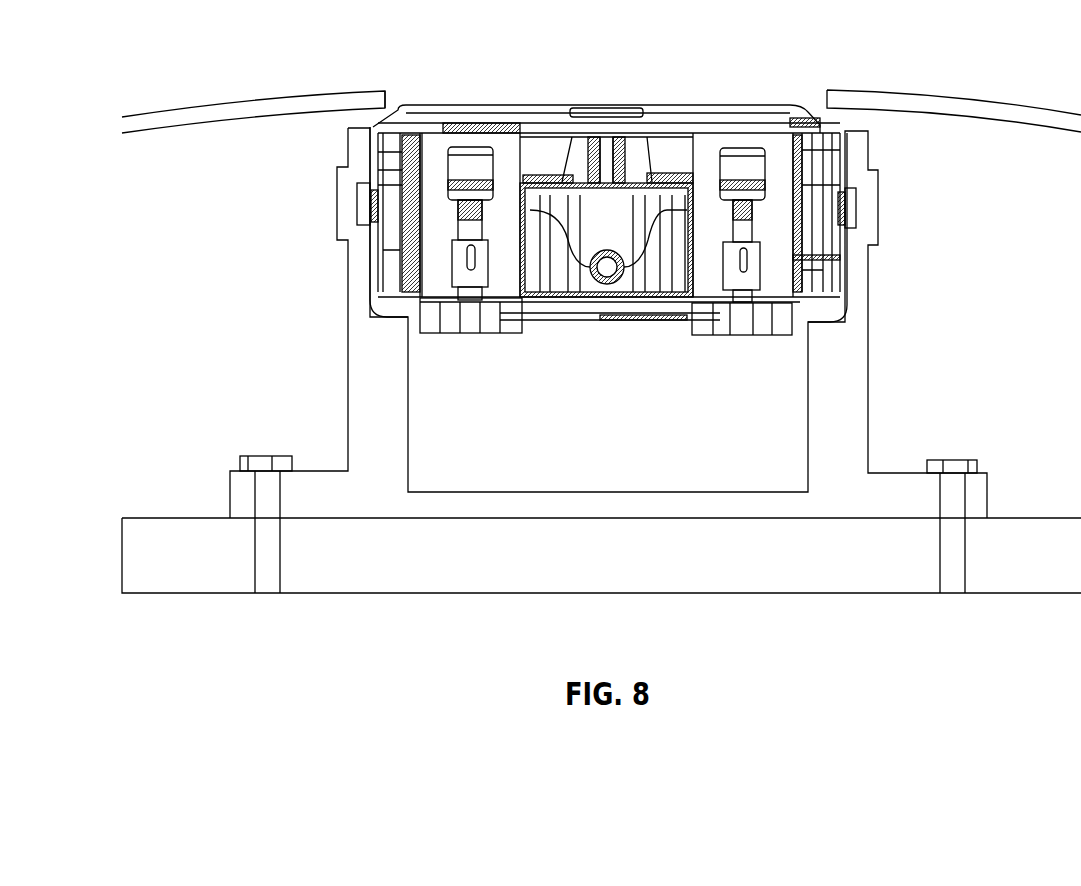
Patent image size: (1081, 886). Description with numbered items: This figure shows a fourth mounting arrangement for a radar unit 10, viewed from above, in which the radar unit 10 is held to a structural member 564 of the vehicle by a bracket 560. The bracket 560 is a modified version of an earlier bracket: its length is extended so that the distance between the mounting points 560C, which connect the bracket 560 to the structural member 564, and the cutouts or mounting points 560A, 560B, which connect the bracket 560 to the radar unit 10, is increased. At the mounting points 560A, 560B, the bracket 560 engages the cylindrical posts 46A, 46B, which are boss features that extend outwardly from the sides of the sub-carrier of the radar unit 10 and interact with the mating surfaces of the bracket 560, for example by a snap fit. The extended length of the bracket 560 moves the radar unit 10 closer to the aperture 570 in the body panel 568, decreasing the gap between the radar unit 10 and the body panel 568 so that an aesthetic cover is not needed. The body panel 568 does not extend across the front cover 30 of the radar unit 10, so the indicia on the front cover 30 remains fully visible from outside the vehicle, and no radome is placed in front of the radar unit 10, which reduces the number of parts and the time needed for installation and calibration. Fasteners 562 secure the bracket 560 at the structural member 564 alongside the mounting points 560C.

The radar unit 10 is at (608, 177).
The front cover 30 is at (497, 103).
The cylindrical post 46A is at (847, 220).
The cylindrical post 46B is at (357, 215).
The bracket 560 is at (853, 415).
The mounting point 560A is at (857, 195).
The mounting point 560B is at (357, 195).
The mounting point 560C is at (250, 513).
The second bracket bolt 562 is at (975, 520).
The structural member 564 is at (750, 575).
The body panel 568 is at (178, 105).
The aperture 570 is at (386, 100).